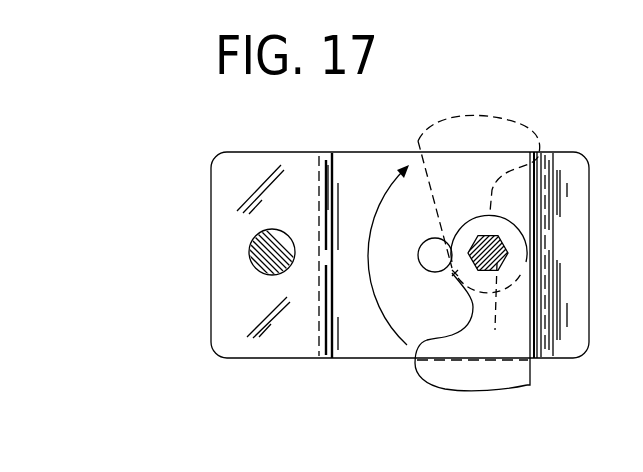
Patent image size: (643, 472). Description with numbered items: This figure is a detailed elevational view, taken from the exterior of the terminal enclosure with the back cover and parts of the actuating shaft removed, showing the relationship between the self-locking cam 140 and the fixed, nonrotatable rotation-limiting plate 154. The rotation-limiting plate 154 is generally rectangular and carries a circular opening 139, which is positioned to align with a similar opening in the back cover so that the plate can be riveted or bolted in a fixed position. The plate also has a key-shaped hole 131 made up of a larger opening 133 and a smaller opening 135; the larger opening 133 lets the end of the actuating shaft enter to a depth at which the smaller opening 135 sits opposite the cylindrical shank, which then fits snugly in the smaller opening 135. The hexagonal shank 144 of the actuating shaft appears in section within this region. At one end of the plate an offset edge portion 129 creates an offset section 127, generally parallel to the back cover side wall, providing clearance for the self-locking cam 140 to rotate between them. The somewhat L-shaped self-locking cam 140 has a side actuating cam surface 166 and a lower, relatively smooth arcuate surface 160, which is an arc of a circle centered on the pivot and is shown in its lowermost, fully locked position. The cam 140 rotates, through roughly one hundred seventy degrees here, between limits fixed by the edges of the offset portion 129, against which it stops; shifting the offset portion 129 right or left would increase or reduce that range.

The rotation-limiting plate 154 is at (221, 144).
The offset edge portion 129 is at (550, 160).
The offset section 127 is at (358, 360).
The circular opening 139 is at (273, 229).
The key-shaped hole 131 is at (419, 228).
The larger opening 133 is at (424, 274).
The shank 144 is at (481, 239).
The smaller opening 135 is at (490, 307).
The side actuating cam surface 166 is at (433, 336).
The lower arcuate surface 160 is at (514, 276).
The self-locking cam 140 is at (542, 381).